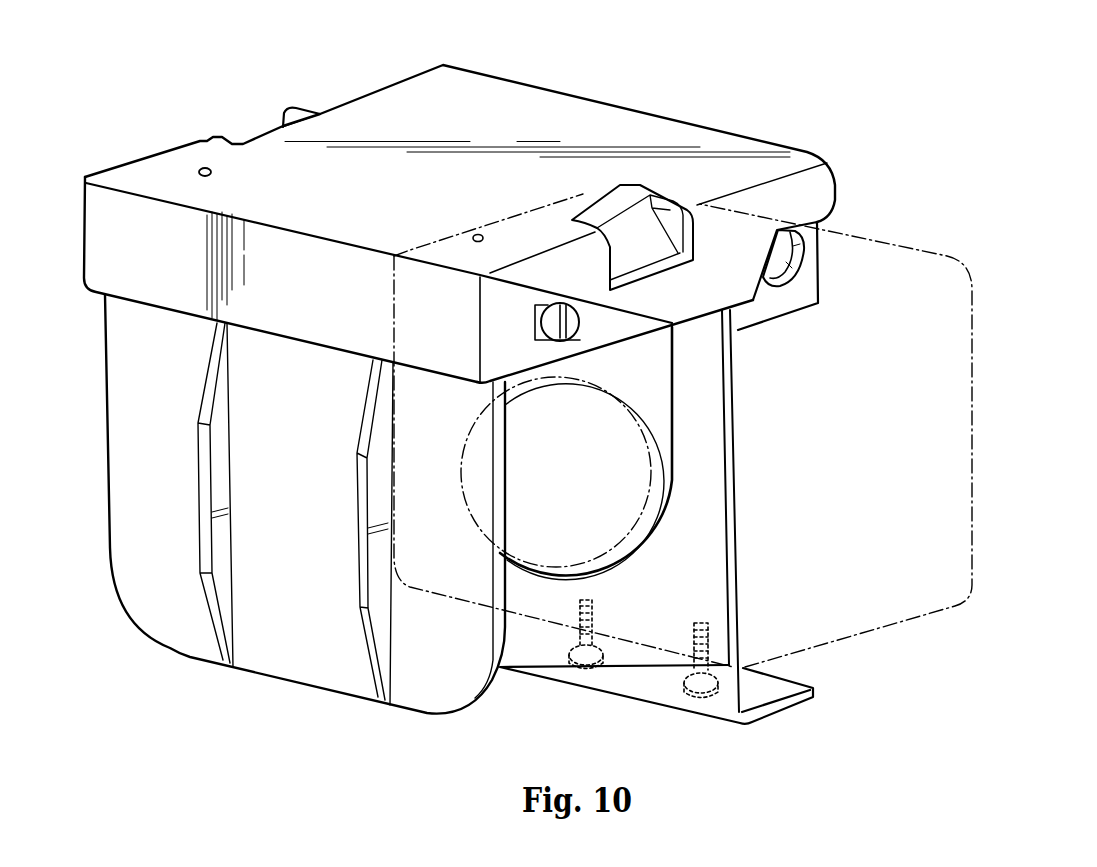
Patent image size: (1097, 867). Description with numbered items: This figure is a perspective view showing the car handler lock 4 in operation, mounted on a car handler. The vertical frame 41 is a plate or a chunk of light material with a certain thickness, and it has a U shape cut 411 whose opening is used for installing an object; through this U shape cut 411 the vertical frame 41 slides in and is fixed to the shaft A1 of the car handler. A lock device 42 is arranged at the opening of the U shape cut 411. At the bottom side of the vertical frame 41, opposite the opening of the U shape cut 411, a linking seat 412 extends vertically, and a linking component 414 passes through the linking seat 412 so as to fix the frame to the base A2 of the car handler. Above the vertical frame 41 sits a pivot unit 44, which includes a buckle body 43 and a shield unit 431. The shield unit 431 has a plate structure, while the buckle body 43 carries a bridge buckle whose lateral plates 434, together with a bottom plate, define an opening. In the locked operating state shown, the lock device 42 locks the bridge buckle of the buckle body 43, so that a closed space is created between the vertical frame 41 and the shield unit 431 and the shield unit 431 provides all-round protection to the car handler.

The car handler lock 4 is at (624, 68).
The buckle body 43 is at (362, 100).
The lateral plates 434 is at (822, 193).
The pivot unit 44 is at (65, 236).
The lock device 42 is at (800, 300).
The shield unit 431 is at (118, 500).
The vertical frame 41 is at (736, 577).
The U shape cut 411 is at (593, 578).
The linking seat 412 is at (787, 712).
The linking component 414 is at (690, 710).
The shaft A1 is at (482, 468).
The base A2 is at (963, 310).